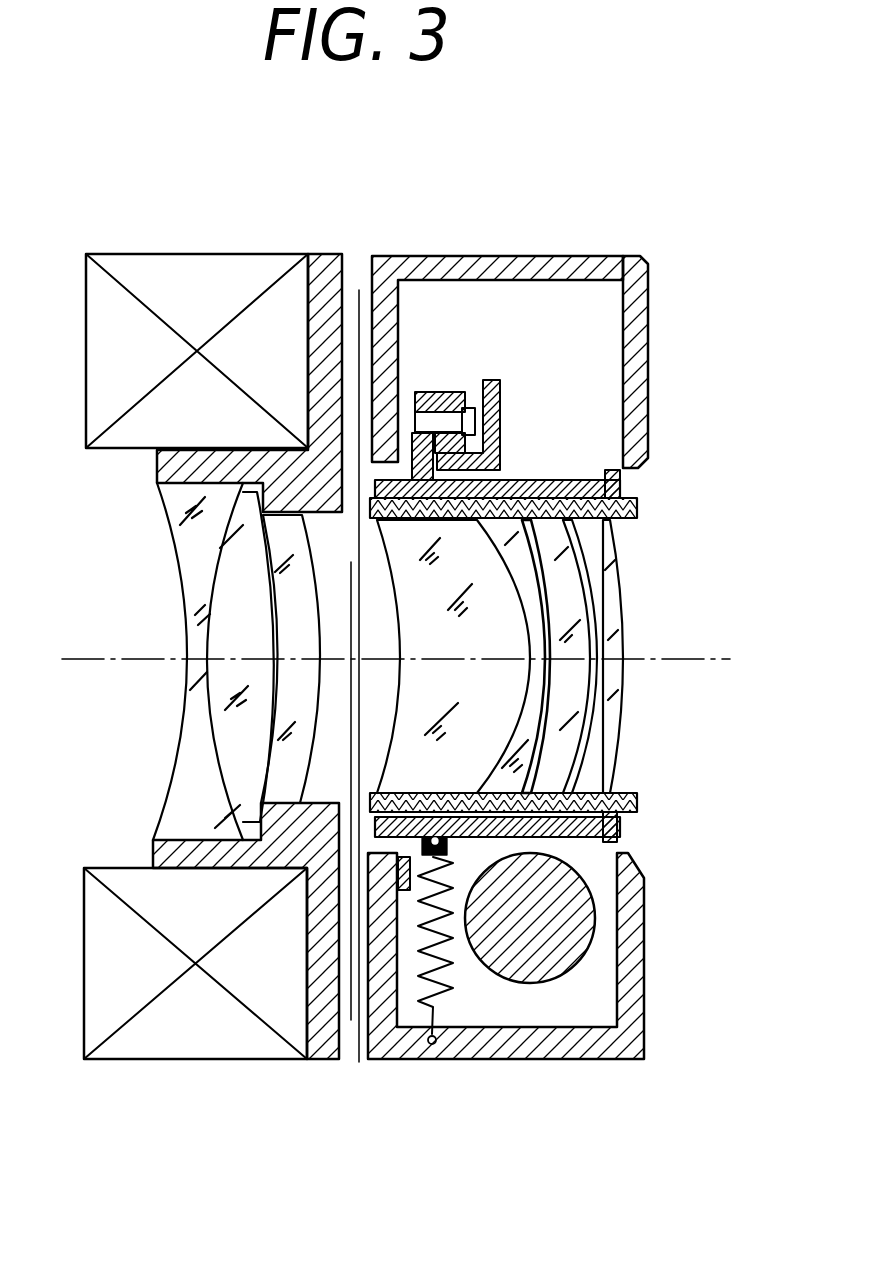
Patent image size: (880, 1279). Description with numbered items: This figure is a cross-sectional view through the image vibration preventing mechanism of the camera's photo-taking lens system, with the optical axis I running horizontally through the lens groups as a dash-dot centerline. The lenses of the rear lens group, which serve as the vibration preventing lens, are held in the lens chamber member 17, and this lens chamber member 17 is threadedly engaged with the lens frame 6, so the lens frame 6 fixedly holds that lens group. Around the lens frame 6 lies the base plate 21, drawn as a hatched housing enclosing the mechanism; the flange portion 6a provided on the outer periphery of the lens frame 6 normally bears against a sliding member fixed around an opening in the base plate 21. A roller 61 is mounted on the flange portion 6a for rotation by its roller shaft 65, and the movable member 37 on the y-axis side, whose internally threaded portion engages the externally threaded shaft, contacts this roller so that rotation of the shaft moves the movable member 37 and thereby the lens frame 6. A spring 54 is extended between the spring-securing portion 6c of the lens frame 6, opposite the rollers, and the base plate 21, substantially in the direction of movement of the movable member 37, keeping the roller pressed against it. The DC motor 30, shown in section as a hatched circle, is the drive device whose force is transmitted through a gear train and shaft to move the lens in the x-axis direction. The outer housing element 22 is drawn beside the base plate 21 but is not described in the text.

The optical axis I is at (95, 658).
The base plate 21 is at (388, 256).
The housing outer wall 22 is at (650, 369).
The lens frame 6 is at (570, 480).
The flange portion 6a is at (422, 392).
The spring-securing portion 6c is at (447, 845).
The lens chamber member 17 is at (636, 506).
The movable member 37 is at (503, 400).
The roller 61 is at (452, 392).
The roller shaft 65 is at (442, 392).
The spring 54 is at (440, 1000).
The DC motor 30 is at (550, 960).